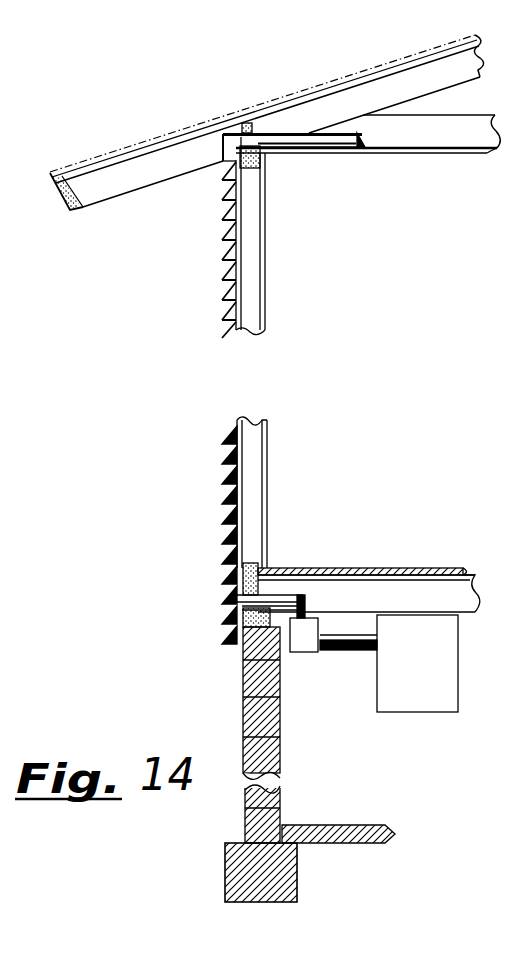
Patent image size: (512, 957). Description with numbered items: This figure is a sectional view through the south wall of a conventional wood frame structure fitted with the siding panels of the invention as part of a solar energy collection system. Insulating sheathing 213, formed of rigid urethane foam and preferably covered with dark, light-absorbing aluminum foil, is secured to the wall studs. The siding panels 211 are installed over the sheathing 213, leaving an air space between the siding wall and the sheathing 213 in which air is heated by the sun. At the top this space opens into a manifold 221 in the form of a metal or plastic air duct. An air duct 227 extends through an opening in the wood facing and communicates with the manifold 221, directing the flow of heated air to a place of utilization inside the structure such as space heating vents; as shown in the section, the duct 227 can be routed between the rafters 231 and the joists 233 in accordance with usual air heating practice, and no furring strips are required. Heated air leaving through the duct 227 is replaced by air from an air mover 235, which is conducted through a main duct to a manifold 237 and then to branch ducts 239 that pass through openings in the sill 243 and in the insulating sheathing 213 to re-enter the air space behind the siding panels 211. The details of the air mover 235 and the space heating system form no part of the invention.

The siding panels 211 is at (226, 228).
The insulating sheathing 213 is at (230, 447).
The manifold 221 is at (222, 153).
The air duct 227 is at (296, 152).
The rafters 231 is at (402, 88).
The joists 233 is at (470, 149).
The air mover 235 is at (338, 629).
The manifold 237 is at (300, 648).
The branch ducts 239 is at (283, 588).
The sill 243 is at (266, 568).